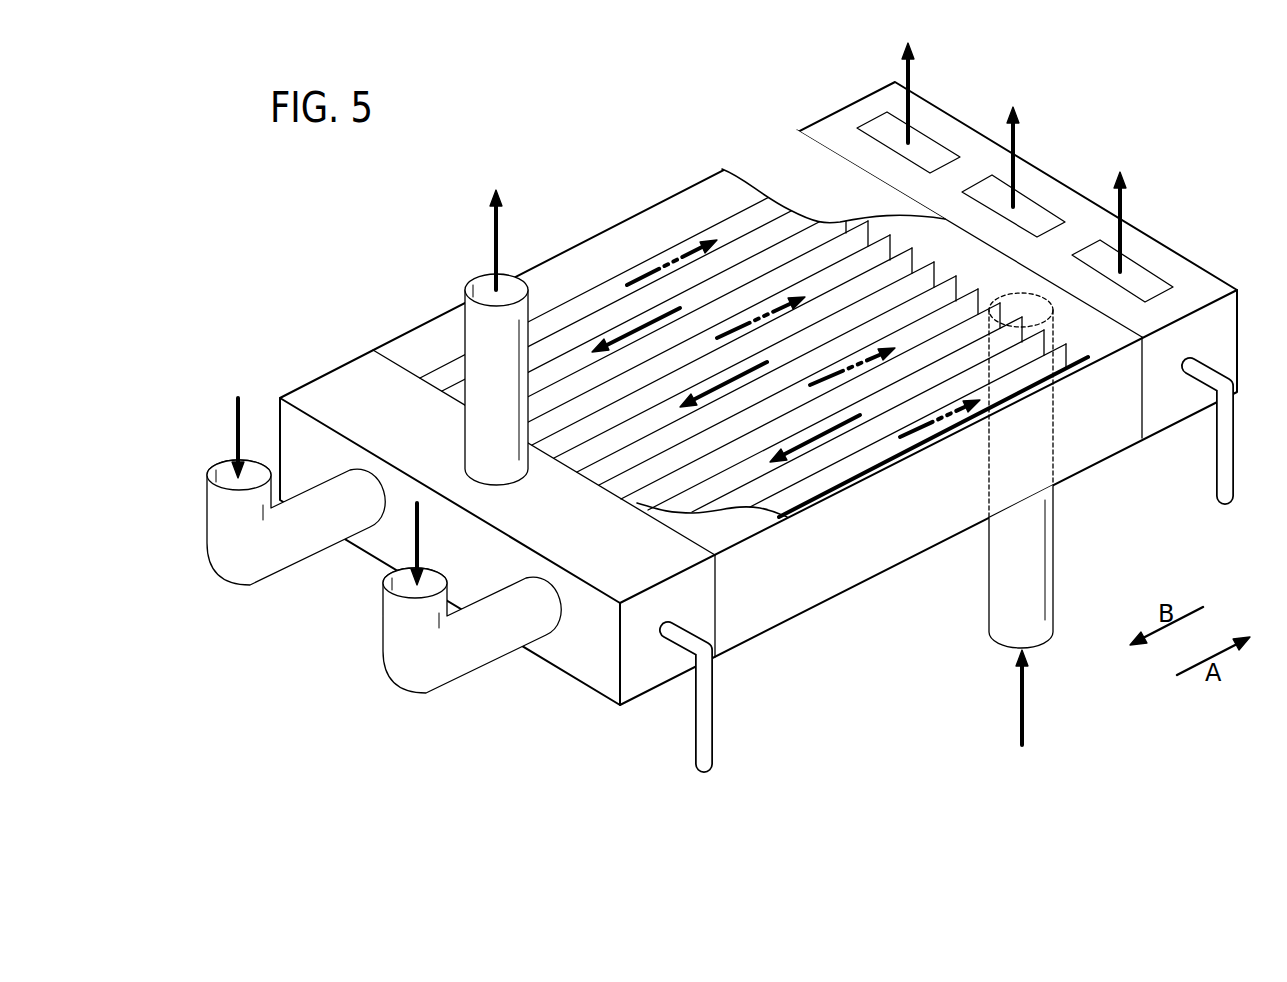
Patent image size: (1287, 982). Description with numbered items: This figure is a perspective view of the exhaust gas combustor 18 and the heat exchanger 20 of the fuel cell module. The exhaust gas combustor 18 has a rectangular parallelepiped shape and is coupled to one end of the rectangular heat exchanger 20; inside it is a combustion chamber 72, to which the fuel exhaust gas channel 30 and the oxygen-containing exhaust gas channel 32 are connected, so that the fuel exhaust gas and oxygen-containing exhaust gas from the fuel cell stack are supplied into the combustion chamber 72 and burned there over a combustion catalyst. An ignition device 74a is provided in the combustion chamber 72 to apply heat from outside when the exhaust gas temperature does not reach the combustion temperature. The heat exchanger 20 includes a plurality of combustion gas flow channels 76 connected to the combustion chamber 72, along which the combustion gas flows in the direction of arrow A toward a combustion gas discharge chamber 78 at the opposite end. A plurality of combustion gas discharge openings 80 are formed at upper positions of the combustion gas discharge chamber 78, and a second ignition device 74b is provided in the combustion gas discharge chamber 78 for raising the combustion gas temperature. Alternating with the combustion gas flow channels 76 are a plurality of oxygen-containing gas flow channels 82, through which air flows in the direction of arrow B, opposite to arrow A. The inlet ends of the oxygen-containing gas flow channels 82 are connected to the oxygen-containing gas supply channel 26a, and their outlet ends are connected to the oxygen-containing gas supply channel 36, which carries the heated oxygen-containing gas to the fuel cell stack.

The exhaust gas combustor 18 is at (330, 386).
The heat exchanger 20 is at (766, 640).
The oxygen-containing gas supply channel 26a is at (1039, 552).
The fuel exhaust gas channel 30 is at (285, 558).
The oxygen-containing exhaust gas channel 32 is at (468, 668).
The oxygen-containing gas supply channel 36 is at (477, 428).
The combustion chamber 72 is at (578, 658).
The ignition device 74a is at (702, 723).
The ignition device 74b is at (1225, 455).
The combustion gas flow channels 76 is at (652, 268).
The combustion gas discharge chamber 78 is at (1173, 268).
The combustion gas discharge openings 80 is at (1047, 218).
The oxygen-containing gas flow channels 82 is at (813, 440).